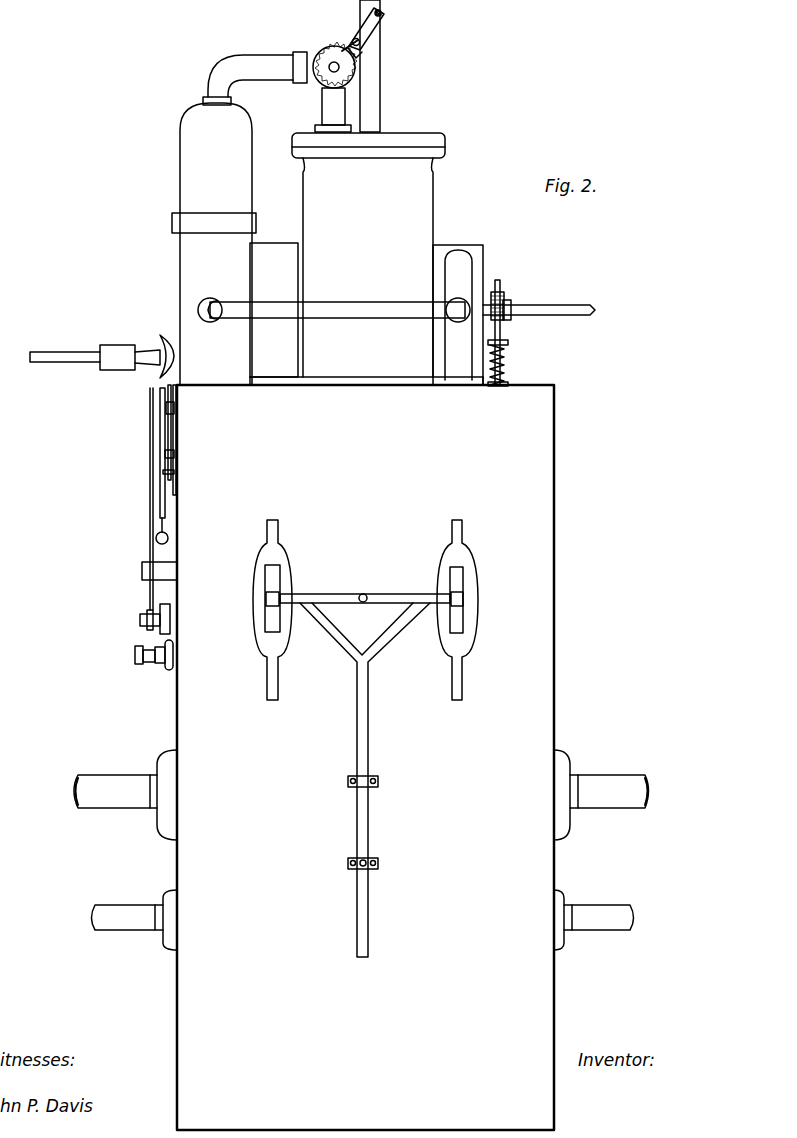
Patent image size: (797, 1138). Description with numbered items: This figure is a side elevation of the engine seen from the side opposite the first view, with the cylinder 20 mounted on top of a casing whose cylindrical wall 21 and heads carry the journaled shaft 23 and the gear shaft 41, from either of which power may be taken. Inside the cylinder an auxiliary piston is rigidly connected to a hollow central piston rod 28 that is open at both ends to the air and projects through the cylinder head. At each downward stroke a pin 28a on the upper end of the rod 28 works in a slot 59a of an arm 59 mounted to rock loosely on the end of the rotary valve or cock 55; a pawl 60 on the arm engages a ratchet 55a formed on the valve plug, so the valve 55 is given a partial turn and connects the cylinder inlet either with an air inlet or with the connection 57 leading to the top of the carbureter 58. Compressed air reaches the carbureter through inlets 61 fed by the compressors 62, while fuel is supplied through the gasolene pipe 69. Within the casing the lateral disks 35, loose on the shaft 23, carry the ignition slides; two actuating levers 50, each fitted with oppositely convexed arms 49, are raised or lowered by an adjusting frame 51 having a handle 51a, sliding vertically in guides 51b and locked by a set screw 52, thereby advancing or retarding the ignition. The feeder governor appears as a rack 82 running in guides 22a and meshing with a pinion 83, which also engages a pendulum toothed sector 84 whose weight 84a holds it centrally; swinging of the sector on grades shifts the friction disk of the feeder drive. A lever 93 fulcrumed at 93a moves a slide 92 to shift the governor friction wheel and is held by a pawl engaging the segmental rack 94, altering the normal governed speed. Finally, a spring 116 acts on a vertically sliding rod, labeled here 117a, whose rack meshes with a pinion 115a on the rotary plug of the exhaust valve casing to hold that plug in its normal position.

The cylinder 20 is at (368, 255).
The cylindrical wall 21 is at (365, 757).
The guides 22a is at (174, 456).
The shaft 23 is at (108, 782).
The central piston rod 28 is at (375, 115).
The pin 28a is at (384, 14).
The lateral disks 35 is at (255, 640).
The shaft 41 is at (115, 915).
The oppositely convexed arms 49 is at (275, 578).
The actuating lever 50 is at (266, 596).
The adjusting frame 51 is at (357, 752).
The handle 51a is at (365, 594).
The guides 51b is at (350, 787).
The set screw 52 is at (348, 863).
The rotary valve or cock 55 is at (322, 82).
The ratchet 55a is at (350, 72).
The connection 57 is at (254, 62).
The carbureter 58 is at (185, 158).
The arm 59 is at (350, 44).
The slot 59a is at (372, 12).
The pawl 60 is at (363, 51).
The inlets 61 is at (352, 305).
The compressors 62 is at (272, 250).
The gasolene pipe 69 is at (66, 358).
The rack 82 is at (173, 432).
The pinion 83 is at (174, 407).
The toothed sector 84 is at (160, 398).
The weight 84a is at (168, 536).
The slide 92 is at (160, 616).
The lever 93 is at (150, 500).
The fulcrum 93a is at (135, 656).
The segmental rack 94 is at (142, 570).
The pinion 115a is at (505, 320).
The spring 116 is at (508, 363).
The ratchet 117a is at (502, 293).